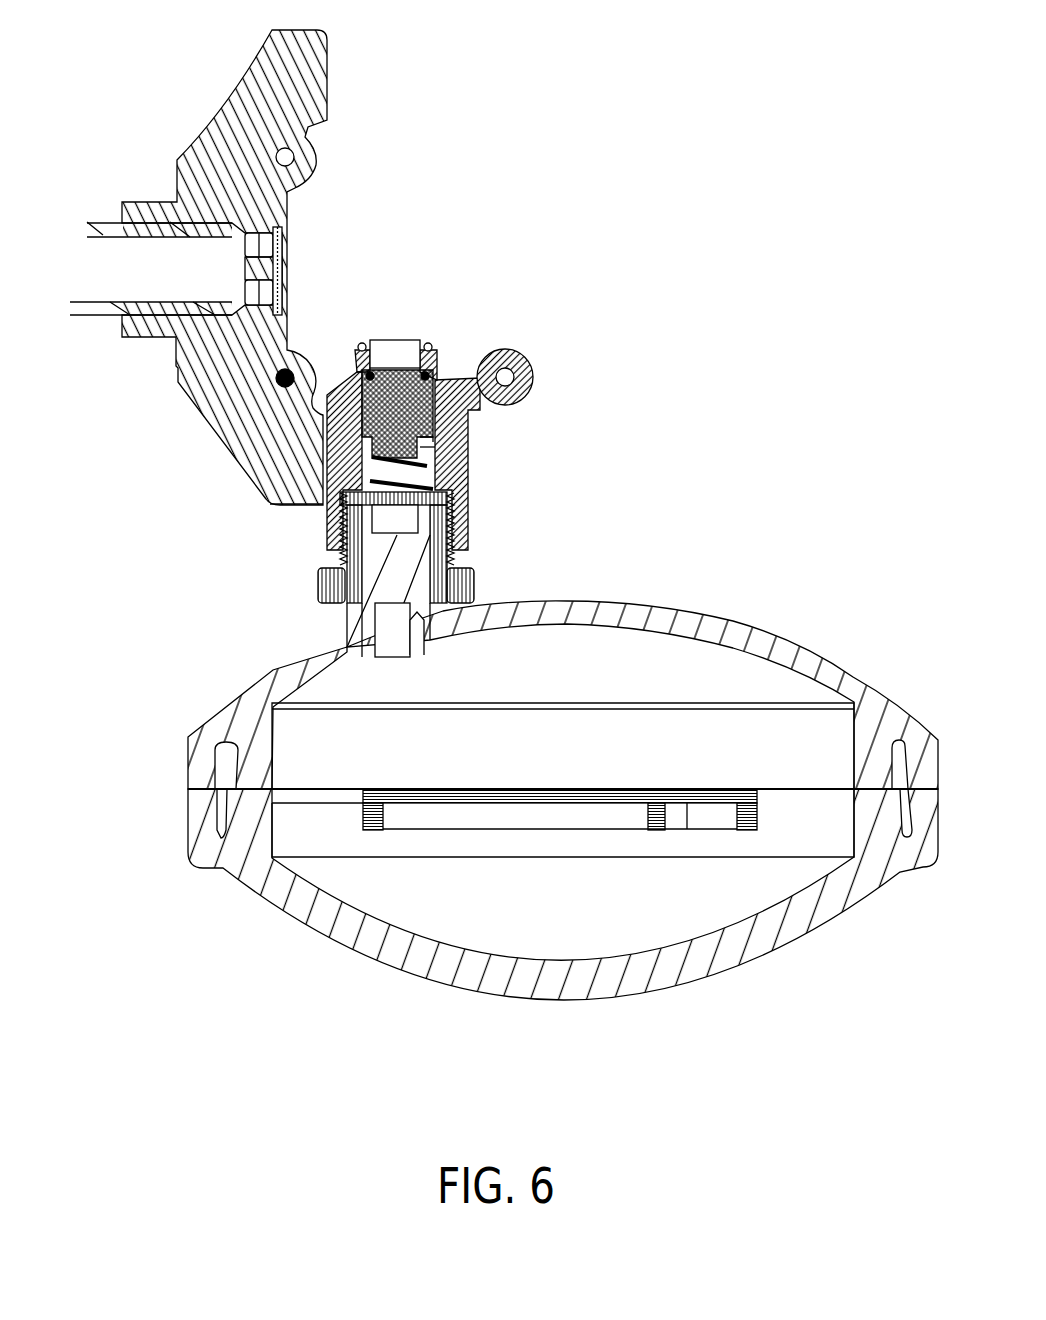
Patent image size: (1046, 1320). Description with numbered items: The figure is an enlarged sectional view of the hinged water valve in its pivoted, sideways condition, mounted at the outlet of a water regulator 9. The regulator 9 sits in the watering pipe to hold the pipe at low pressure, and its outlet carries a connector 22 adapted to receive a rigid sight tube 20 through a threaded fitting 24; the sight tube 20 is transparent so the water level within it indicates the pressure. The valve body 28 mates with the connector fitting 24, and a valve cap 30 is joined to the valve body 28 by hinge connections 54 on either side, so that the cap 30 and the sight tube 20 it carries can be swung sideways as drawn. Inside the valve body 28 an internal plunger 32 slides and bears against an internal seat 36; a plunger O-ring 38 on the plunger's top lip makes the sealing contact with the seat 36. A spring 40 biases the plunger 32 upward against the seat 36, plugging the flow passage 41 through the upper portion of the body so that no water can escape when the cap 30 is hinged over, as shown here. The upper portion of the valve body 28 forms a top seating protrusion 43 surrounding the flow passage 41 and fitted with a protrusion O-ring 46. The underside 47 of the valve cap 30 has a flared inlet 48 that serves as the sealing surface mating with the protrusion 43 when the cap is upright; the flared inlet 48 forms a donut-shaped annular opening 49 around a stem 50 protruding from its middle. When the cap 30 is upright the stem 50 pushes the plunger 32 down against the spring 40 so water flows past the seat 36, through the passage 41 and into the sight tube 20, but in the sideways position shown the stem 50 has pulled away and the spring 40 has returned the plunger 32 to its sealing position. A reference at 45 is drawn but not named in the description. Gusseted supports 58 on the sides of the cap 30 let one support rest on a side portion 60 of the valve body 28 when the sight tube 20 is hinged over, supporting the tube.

The water regulator 9 is at (715, 620).
The sight tube 20 is at (85, 318).
The connector 22 is at (345, 620).
The threaded fitting 24 is at (316, 580).
The valve body 28 is at (468, 467).
The valve cap 30 is at (153, 200).
The plunger 32 is at (423, 440).
The internal seat 36 is at (447, 376).
The plunger O-ring 38 is at (360, 373).
The spring 40 is at (413, 480).
The flow passage 41 is at (398, 350).
The top seating protrusion 43 is at (431, 346).
The mounting ear 45 is at (485, 355).
The protrusion O-ring 46 is at (358, 348).
The underside 47 is at (288, 332).
The flared inlet 48 is at (288, 220).
The annular opening 49 is at (293, 300).
The stem 50 is at (290, 235).
The hinge connection 54 is at (318, 160).
The gusseted support 58 is at (290, 508).
The side portion 60 is at (436, 447).